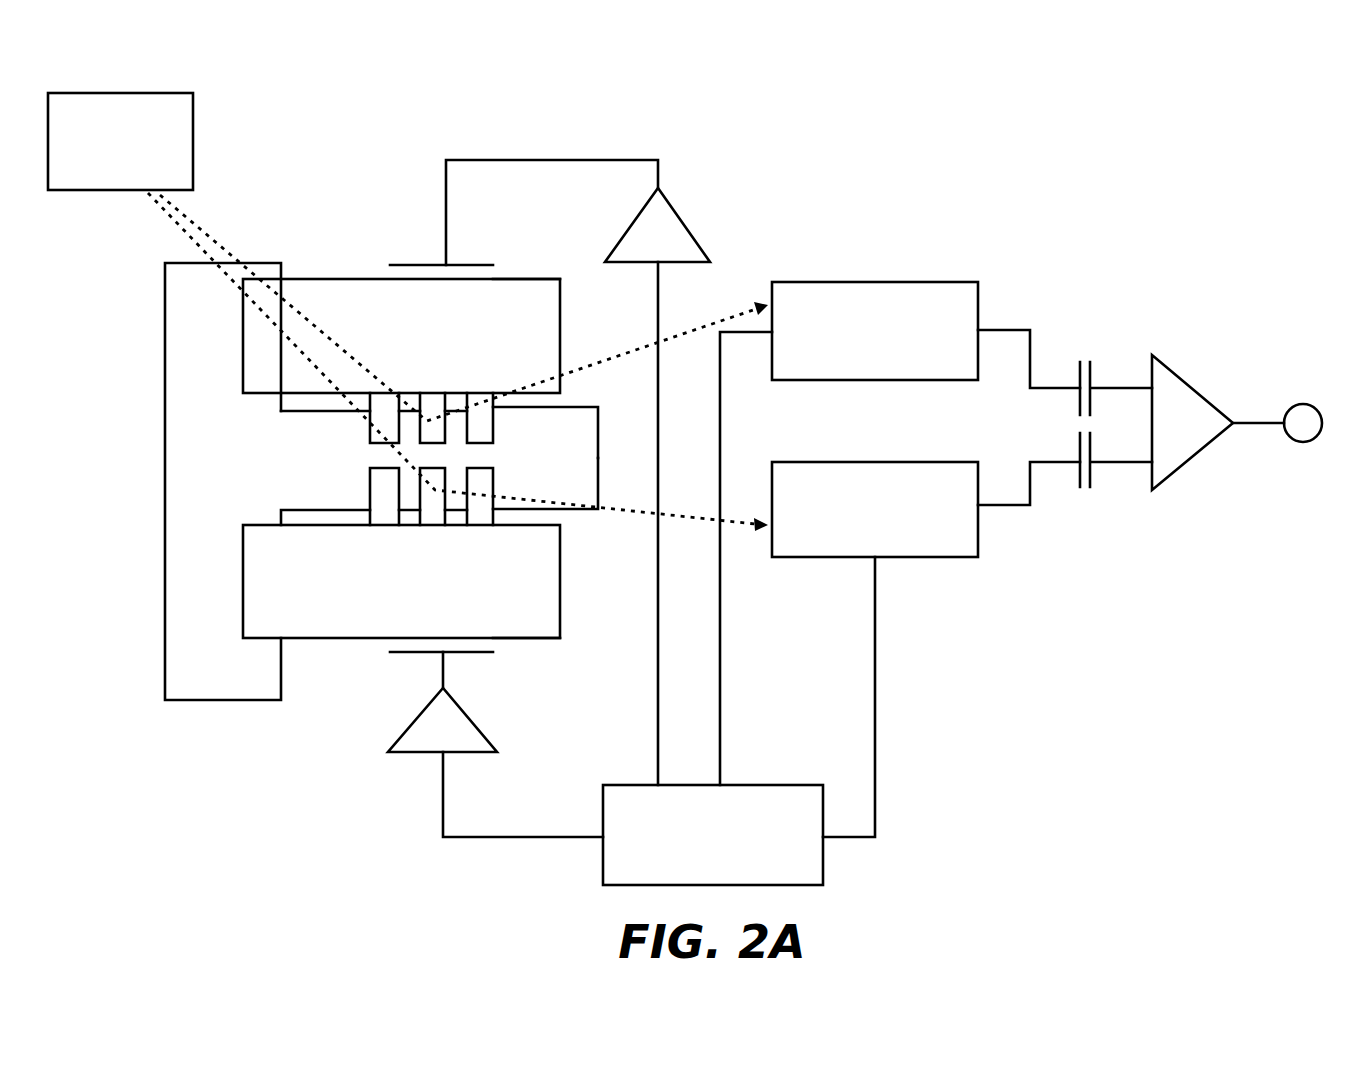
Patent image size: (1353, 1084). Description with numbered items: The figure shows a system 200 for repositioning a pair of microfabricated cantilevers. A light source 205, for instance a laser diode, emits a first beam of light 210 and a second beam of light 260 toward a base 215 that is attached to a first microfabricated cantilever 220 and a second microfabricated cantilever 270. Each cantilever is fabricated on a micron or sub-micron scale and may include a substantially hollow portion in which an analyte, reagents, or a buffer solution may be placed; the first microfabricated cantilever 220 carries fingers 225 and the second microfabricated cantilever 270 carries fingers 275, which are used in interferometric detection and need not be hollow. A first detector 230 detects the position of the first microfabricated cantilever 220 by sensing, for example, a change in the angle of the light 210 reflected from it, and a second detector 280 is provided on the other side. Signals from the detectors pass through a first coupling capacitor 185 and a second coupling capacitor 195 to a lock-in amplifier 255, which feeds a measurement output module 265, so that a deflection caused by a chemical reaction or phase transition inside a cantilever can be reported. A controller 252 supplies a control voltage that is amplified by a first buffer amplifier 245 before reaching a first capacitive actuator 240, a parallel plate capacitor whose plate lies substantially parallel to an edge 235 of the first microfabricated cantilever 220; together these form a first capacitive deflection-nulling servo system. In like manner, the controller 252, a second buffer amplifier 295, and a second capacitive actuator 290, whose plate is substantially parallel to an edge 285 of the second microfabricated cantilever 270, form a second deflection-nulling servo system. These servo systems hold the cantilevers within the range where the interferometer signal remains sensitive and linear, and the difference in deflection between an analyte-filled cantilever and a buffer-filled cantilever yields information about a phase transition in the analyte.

The system 200 is at (685, 89).
The light source 205 is at (100, 152).
The first beam of light 210 is at (165, 212).
The second beam of light 260 is at (204, 234).
The base 215 is at (223, 469).
The second microfabricated cantilever 270 is at (395, 341).
The edge of the second microfabricated cantilever 285 is at (523, 278).
The second capacitive actuator 290 is at (420, 263).
The second buffer amplifier 295 is at (638, 249).
The fingers of the second microfabricated cantilever 275 is at (493, 420).
The fingers of the first microfabricated cantilever 225 is at (493, 492).
The first microfabricated cantilever 220 is at (395, 596).
The edge of the first microfabricated cantilever 235 is at (528, 640).
The first capacitive actuator 240 is at (410, 654).
The first buffer amplifier 245 is at (423, 739).
The second detector 280 is at (853, 359).
The first detector 230 is at (853, 537).
The second coupling capacitor 195 is at (1089, 362).
The first coupling capacitor 185 is at (1087, 488).
The lock-in amplifier 255 is at (1165, 434).
The measurement output module 265 is at (1303, 405).
The controller 252 is at (691, 864).